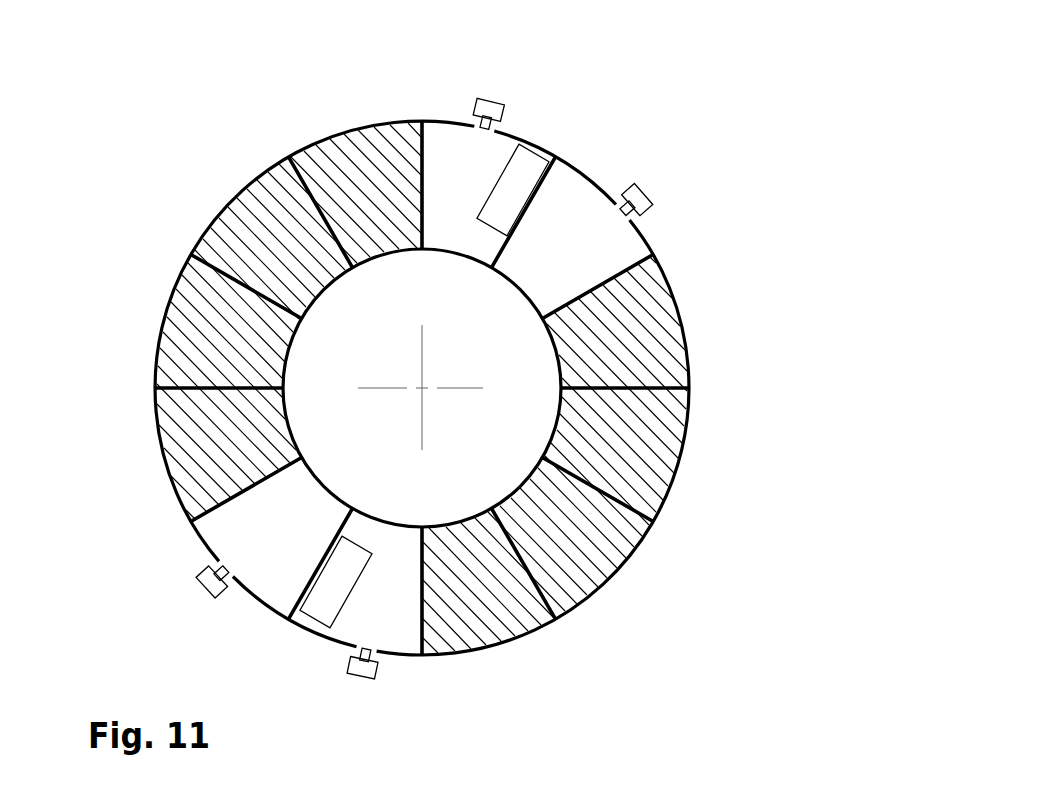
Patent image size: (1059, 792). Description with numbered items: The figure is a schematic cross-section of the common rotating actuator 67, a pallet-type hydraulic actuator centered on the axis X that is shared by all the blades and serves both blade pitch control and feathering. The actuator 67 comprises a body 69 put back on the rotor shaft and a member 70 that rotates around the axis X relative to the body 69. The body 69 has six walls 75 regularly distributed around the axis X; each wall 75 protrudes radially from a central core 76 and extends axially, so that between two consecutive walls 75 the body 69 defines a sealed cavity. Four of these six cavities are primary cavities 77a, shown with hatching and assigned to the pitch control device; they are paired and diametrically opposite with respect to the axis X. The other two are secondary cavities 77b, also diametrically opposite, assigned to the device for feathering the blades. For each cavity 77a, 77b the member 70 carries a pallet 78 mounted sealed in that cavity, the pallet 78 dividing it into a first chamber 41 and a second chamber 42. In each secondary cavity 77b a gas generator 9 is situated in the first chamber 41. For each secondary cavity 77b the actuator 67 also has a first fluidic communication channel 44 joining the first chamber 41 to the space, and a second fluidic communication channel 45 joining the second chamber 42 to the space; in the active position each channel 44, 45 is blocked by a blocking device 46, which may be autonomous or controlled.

The member 70 is at (250, 160).
The body 69 is at (377, 261).
The wall 75 is at (428, 128).
The primary cavity 77a is at (377, 168).
The secondary cavity 77b is at (593, 188).
The pallet 78 is at (312, 158).
The first fluidic communication channel 44 is at (474, 113).
The blocking device 46 is at (492, 101).
The second fluidic communication channel 45 is at (640, 212).
The gas generator 9 is at (528, 170).
The first chamber 41 is at (442, 190).
The second chamber 42 is at (540, 252).
The common rotating actuator 67 is at (692, 284).
The central core 76 is at (290, 362).
The axis X is at (427, 383).